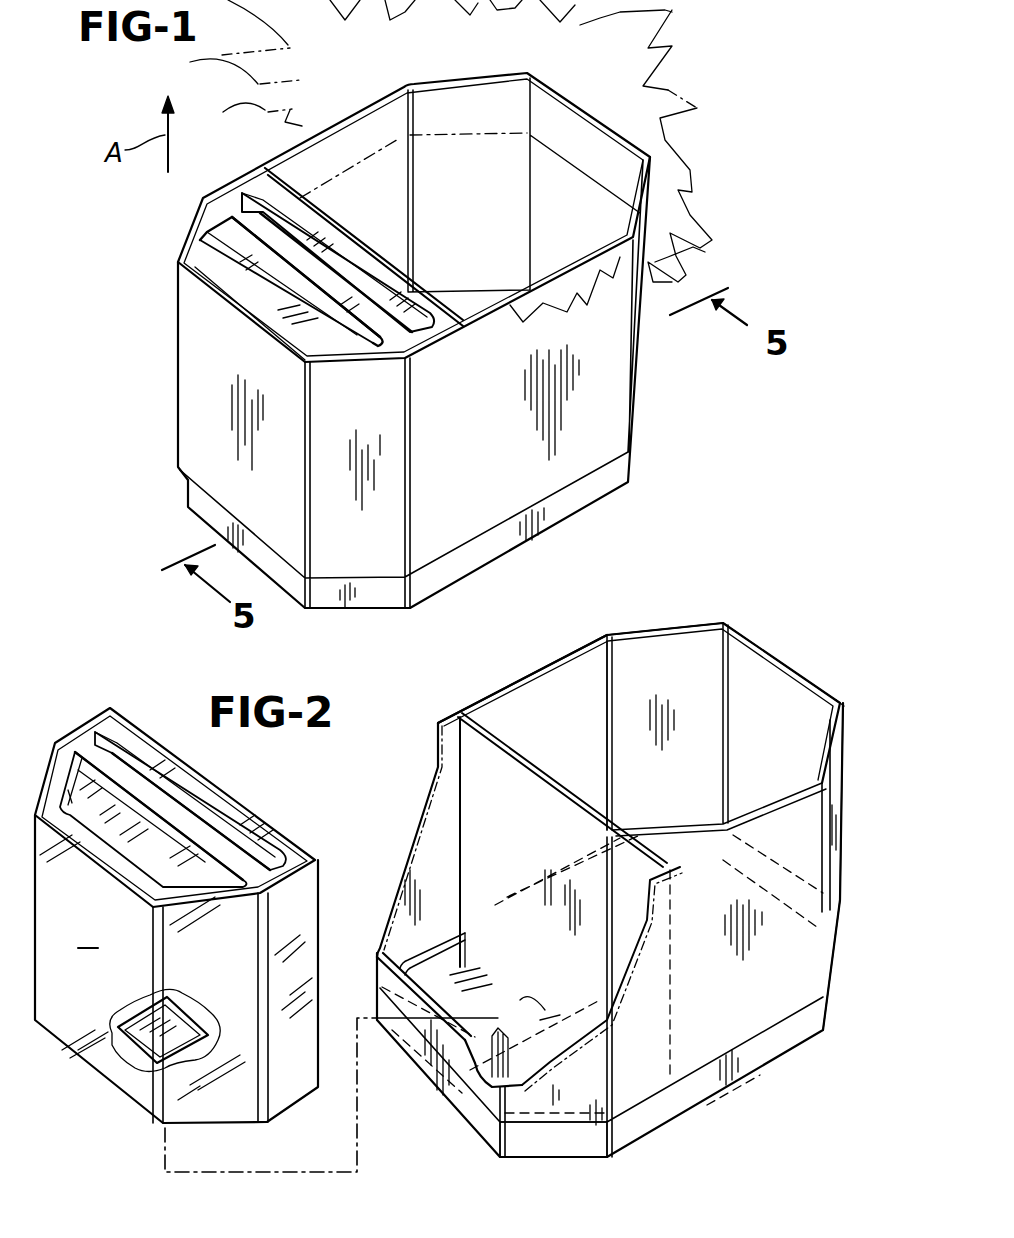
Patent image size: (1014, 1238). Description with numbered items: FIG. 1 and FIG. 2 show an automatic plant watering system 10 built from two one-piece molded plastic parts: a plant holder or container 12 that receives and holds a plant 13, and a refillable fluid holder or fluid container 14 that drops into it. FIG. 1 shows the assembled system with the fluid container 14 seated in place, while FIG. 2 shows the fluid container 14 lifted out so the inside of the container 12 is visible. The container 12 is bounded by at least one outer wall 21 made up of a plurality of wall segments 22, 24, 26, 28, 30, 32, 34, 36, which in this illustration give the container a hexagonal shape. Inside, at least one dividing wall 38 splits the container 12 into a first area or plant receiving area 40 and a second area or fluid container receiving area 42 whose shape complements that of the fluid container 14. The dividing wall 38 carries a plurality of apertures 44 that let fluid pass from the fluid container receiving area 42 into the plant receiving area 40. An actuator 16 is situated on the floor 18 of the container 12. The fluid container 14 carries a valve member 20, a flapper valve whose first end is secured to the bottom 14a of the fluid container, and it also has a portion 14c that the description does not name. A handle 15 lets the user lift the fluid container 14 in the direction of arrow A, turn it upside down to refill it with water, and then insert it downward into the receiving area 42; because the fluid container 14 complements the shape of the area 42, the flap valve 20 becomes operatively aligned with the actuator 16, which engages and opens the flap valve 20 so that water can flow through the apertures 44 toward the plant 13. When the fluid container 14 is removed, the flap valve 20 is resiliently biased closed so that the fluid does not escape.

In FIG. 1, the automatic plant watering system 10 is at (176, 272).
In FIG. 2, the automatic plant watering system 10 is at (404, 802).
In FIG. 1, the plant holder or container 12 is at (608, 407).
In FIG. 2, the plant holder or container 12 is at (812, 678).
In FIG. 1, the plant 13 is at (683, 95).
In FIG. 1, the refillable fluid holder or fluid container 14 is at (262, 321).
In FIG. 2, the refillable fluid holder or fluid container 14 is at (176, 921).
In FIG. 2, the bottom of fluid container 14a is at (148, 1063).
In FIG. 1, the lid top wall 14c is at (253, 286).
In FIG. 2, the lid top wall 14c is at (97, 810).
In FIG. 1, the handle 15 is at (240, 220).
In FIG. 2, the handle 15 is at (180, 807).
In FIG. 2, the actuator 16 is at (475, 1057).
In FIG. 2, the floor 18 is at (563, 1053).
In FIG. 2, the valve member 20 is at (137, 1043).
In FIG. 2, the outer wall 21 is at (840, 708).
In FIG. 2, the wall segment 22 is at (805, 942).
In FIG. 2, the wall segment 24 is at (832, 792).
In FIG. 2, the wall segment 26 is at (760, 640).
In FIG. 2, the wall segment 28 is at (668, 622).
In FIG. 2, the wall segment 30 is at (547, 677).
In FIG. 2, the wall segment 32 is at (385, 930).
In FIG. 2, the wall segment 34 is at (432, 1053).
In FIG. 2, the wall segment 36 is at (537, 1110).
In FIG. 1, the dividing wall 38 is at (367, 240).
In FIG. 2, the dividing wall 38 is at (490, 733).
In FIG. 1, the plant receiving area 40 is at (280, 161).
In FIG. 2, the plant receiving area 40 is at (589, 674).
In FIG. 2, the fluid container receiving area 42 is at (441, 804).
In FIG. 2, the apertures 44 is at (538, 1023).